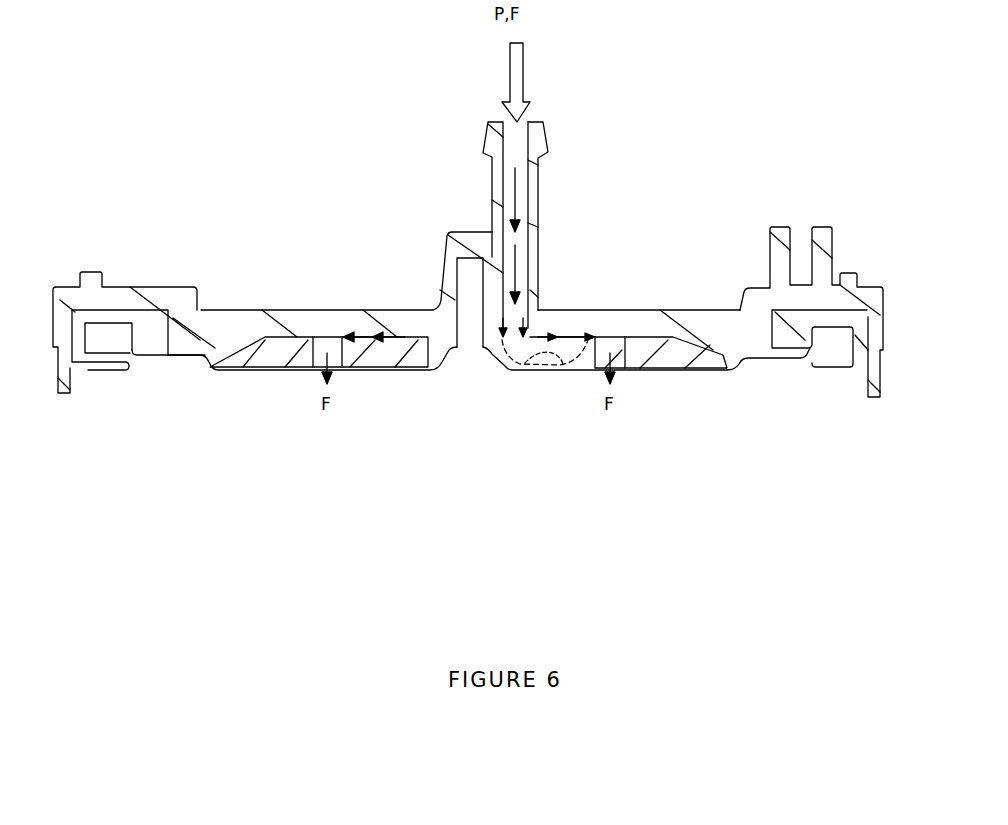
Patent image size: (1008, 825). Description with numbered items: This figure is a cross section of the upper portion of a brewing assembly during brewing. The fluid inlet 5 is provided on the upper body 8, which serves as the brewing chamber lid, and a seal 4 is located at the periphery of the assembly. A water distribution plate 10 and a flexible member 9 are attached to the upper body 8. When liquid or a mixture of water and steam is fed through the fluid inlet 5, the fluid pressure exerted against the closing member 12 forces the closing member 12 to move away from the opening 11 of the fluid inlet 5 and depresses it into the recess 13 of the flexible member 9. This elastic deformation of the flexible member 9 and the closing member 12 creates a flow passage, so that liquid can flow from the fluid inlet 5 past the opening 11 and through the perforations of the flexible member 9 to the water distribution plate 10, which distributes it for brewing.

The seal 4 is at (90, 363).
The fluid inlet 5 is at (520, 132).
The upper body 8 is at (630, 323).
The flexible member 9 is at (677, 357).
The water distribution plate 10 is at (163, 360).
The opening 11 is at (522, 328).
The closing member 12 is at (513, 366).
The recess 13 is at (509, 366).